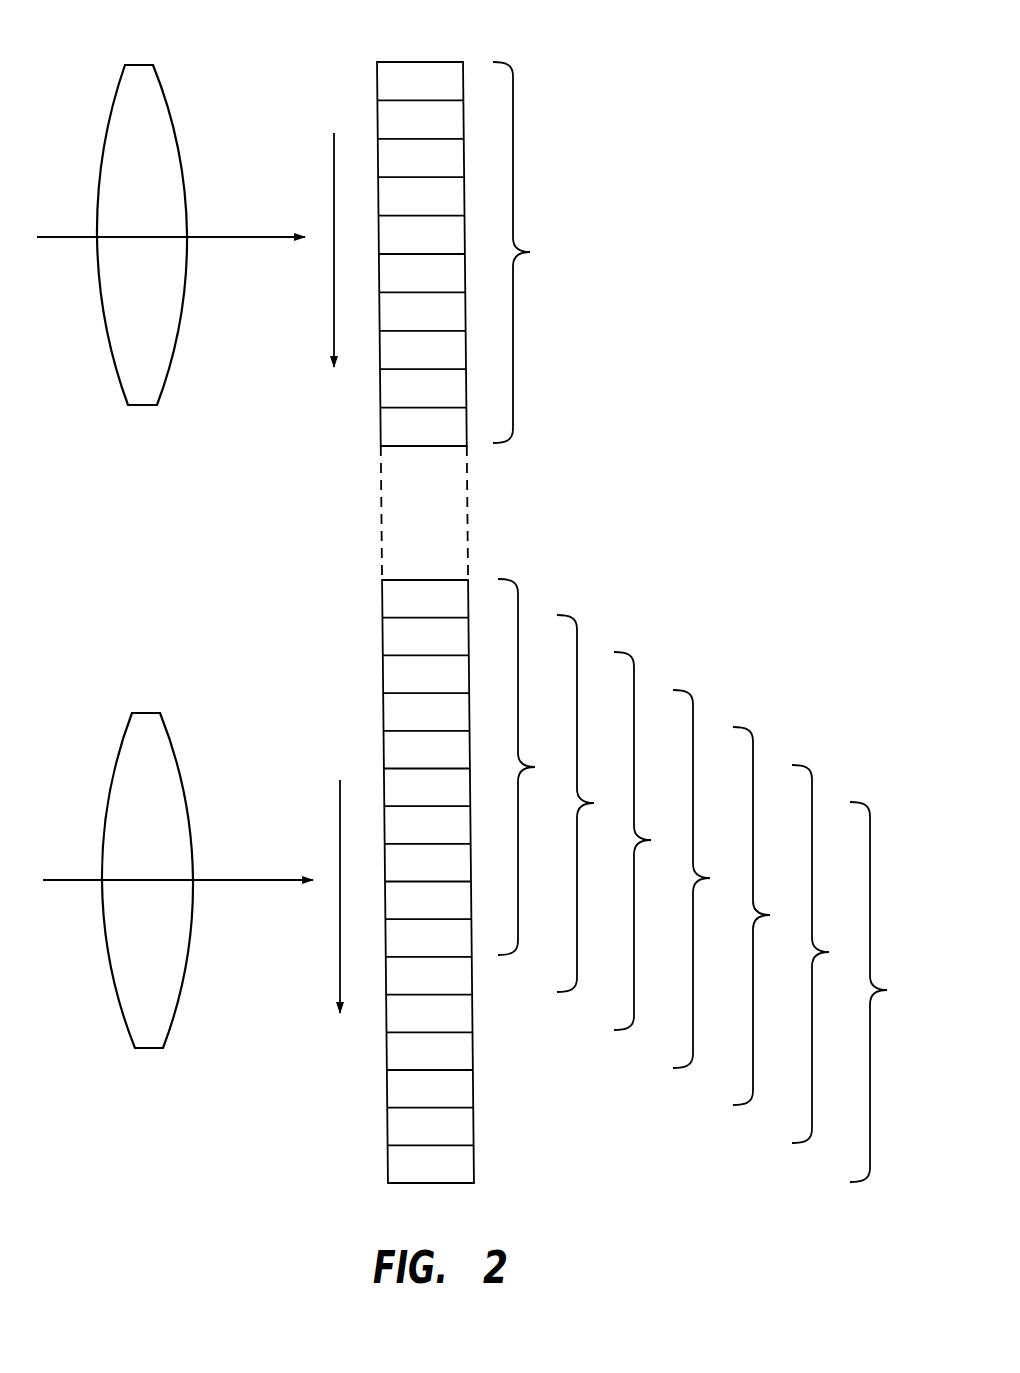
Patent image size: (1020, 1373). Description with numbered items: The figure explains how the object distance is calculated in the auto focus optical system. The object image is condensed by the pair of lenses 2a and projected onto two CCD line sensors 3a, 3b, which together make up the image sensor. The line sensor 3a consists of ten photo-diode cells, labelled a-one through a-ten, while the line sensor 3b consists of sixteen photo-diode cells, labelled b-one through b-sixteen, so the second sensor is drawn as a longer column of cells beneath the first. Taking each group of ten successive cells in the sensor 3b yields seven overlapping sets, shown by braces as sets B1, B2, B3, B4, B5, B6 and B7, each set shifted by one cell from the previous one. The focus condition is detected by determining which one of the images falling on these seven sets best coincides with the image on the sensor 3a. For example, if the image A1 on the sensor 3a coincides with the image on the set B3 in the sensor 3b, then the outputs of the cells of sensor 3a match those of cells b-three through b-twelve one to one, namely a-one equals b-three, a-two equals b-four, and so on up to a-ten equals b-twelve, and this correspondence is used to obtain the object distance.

The pair of lenses 2a is at (163, 92).
The line sensor 3a is at (442, 62).
The line sensor 3b is at (463, 588).
The image A1 is at (525, 252).
The first set B1 is at (529, 767).
The second set B2 is at (588, 803).
The third set B3 is at (646, 841).
The fourth set B4 is at (705, 879).
The fifth set B5 is at (764, 916).
The sixth set B6 is at (823, 954).
The seventh set B7 is at (881, 992).